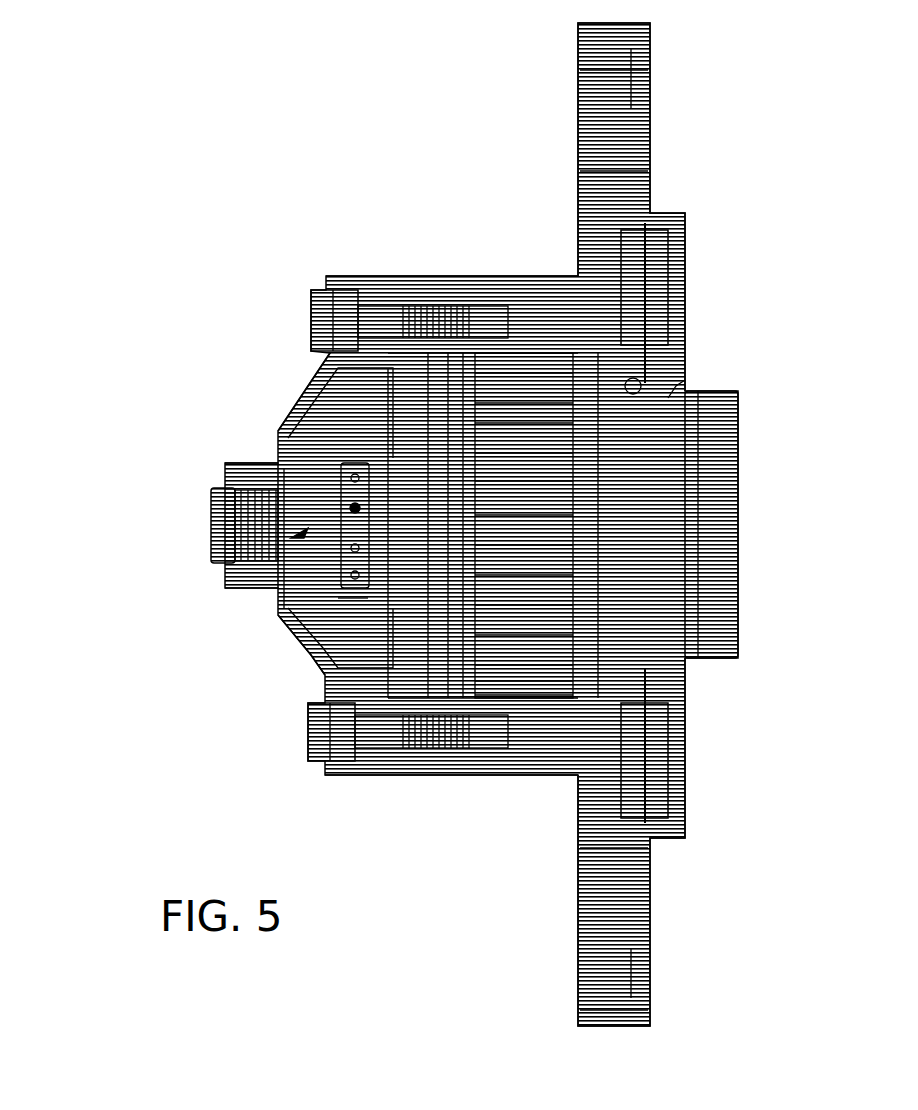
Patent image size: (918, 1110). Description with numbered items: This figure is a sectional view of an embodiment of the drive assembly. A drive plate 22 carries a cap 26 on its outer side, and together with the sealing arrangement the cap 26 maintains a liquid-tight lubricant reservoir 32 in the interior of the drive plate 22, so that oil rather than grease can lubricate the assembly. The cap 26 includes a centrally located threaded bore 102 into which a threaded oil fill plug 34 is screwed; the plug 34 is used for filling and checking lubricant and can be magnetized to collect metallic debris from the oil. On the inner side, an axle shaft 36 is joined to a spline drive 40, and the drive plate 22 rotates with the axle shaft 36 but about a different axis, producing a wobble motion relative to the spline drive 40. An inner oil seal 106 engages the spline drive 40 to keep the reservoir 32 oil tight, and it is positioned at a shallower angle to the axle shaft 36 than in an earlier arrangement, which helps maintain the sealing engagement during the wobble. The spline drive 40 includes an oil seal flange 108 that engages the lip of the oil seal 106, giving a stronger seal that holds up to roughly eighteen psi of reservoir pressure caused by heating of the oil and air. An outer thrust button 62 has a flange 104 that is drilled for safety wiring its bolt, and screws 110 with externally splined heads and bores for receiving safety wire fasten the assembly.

The drive plate 22 is at (596, 32).
The cap 26 is at (297, 387).
The lubricant reservoir 32 is at (313, 610).
The threaded plug 34 is at (205, 518).
The axle shaft 36 is at (702, 512).
The spline drive 40 is at (445, 562).
The outer thrust button 62 is at (322, 365).
The threaded bore 102 is at (262, 487).
The flange 104 is at (295, 524).
The inner oil seal 106 is at (640, 363).
The oil seal flange 108 is at (675, 372).
The screws 110 is at (300, 718).